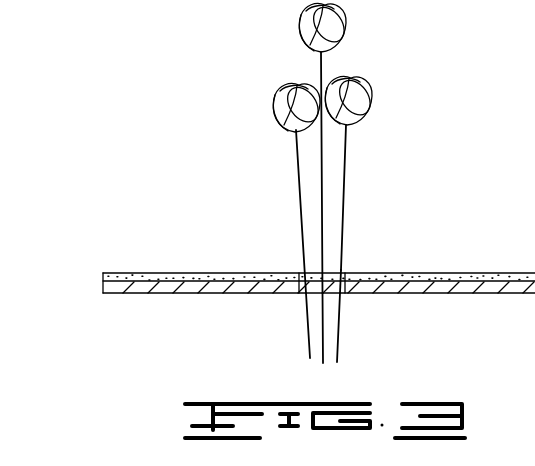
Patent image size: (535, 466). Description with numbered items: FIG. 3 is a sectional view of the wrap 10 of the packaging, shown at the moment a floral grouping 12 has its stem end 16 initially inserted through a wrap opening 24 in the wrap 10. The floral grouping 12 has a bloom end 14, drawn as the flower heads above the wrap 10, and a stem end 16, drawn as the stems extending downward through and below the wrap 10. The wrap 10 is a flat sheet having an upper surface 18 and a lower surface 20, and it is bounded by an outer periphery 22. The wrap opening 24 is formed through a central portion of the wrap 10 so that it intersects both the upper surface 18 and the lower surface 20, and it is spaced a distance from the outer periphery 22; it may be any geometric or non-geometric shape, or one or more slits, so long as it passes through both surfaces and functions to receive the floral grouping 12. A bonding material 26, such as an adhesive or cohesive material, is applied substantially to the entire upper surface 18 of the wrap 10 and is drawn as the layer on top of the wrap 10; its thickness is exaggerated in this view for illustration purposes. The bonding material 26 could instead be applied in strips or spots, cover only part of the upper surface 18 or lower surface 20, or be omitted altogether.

The wrap 10 is at (280, 171).
The floral grouping 12 is at (362, 171).
The bloom end 14 is at (391, 89).
The stem end 16 is at (357, 264).
The upper surface 18 is at (178, 273).
The lower surface 20 is at (388, 294).
The outer periphery 22 is at (103, 286).
The wrap opening 24 is at (311, 300).
The bonding material 26 is at (268, 273).